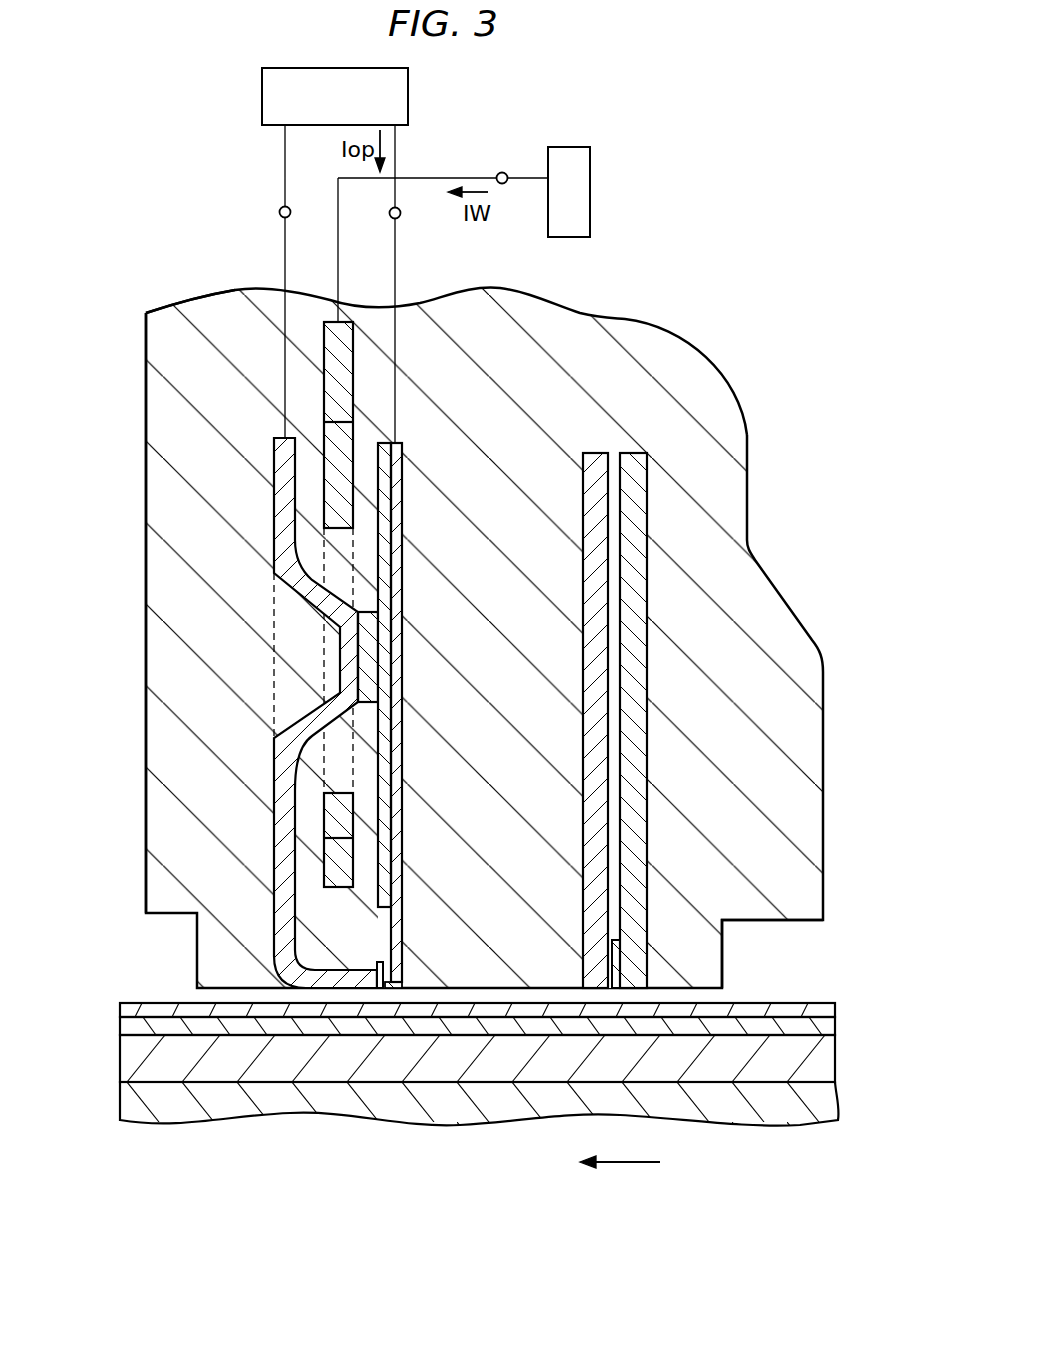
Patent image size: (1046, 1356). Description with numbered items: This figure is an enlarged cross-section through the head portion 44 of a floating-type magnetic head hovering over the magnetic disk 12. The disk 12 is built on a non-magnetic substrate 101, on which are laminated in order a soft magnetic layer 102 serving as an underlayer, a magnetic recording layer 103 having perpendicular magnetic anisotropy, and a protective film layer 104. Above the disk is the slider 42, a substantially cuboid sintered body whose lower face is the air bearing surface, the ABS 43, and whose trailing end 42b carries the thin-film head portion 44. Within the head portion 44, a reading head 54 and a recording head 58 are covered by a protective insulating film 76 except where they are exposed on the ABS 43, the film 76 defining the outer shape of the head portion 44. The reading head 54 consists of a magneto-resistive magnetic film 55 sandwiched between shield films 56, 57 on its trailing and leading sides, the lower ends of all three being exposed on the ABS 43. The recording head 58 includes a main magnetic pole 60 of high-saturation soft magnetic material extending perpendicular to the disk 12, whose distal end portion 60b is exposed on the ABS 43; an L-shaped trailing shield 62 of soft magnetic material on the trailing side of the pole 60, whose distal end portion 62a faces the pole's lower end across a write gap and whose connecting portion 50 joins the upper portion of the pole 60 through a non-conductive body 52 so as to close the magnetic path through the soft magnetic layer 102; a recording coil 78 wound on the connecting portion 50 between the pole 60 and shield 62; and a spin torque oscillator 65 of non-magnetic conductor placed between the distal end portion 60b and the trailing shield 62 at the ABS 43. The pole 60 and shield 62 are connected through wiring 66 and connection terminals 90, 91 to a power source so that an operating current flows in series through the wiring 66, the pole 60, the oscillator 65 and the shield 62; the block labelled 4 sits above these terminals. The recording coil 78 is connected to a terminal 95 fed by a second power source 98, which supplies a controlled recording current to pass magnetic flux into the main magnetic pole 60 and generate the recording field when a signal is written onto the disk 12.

The control unit 4 is at (262, 92).
The magnetic disk 12 is at (443, 1098).
The slider 42 is at (731, 427).
The trailing end 42b is at (146, 553).
The ABS 43 is at (757, 920).
The head portion 44 is at (624, 317).
The connecting portion 50 is at (347, 656).
The non-conductive body 52 is at (357, 627).
The reading head 54 is at (635, 692).
The magnetic film 55 is at (620, 950).
The shield film 56 is at (640, 660).
The shield film 57 is at (605, 620).
The recording head 58 is at (267, 699).
The main magnetic pole 60 is at (402, 852).
The distal end portion 60b is at (397, 988).
The trailing shield 62 is at (267, 757).
The distal end portion 62a is at (323, 988).
The spin torque oscillator 65 is at (382, 988).
The wiring 66 is at (397, 346).
The protective insulating film 76 is at (152, 318).
The recording coil 78 is at (330, 450).
The connection terminal 90 is at (401, 213).
The connection terminal 91 is at (291, 207).
The terminal 95 is at (504, 172).
The second power source 98 is at (592, 168).
The substrate 101 is at (118, 1105).
The soft magnetic layer 102 is at (118, 1055).
The magnetic recording layer 103 is at (118, 1026).
The protective film layer 104 is at (118, 1010).